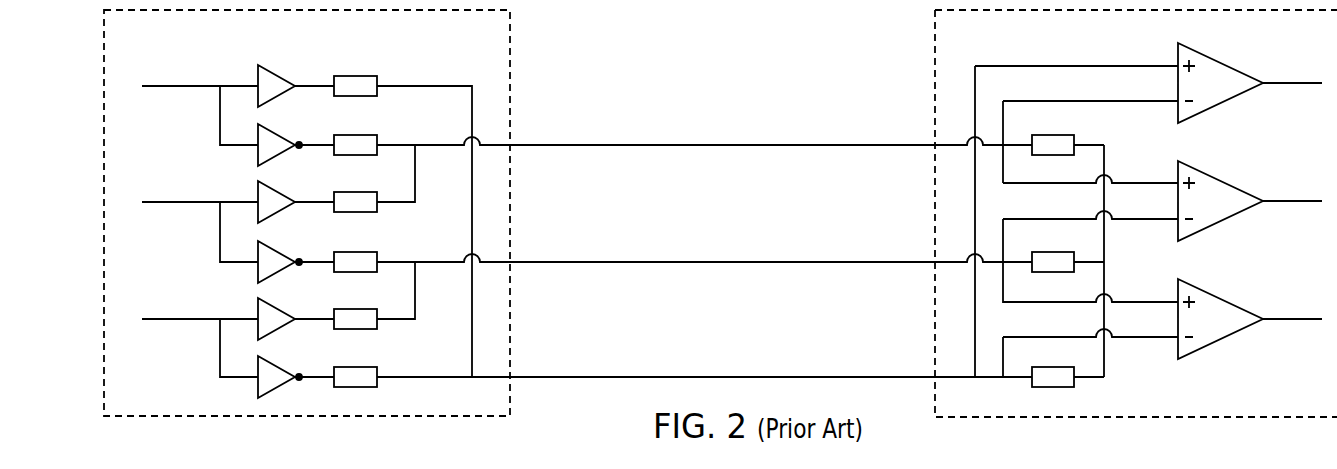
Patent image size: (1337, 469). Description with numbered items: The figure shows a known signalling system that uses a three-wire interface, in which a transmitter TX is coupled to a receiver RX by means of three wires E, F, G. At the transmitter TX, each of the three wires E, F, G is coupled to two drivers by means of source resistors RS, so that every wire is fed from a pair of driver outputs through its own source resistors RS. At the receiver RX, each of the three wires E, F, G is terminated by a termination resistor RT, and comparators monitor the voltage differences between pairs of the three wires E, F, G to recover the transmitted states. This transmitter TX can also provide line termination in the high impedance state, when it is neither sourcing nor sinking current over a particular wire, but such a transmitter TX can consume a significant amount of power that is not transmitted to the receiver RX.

The transmitter TX is at (307, 213).
The receiver RX is at (1136, 213).
The source resistor RS is at (355, 216).
The termination resistor RT is at (1053, 246).
The wire E is at (757, 145).
The wire F is at (757, 262).
The wire G is at (757, 377).